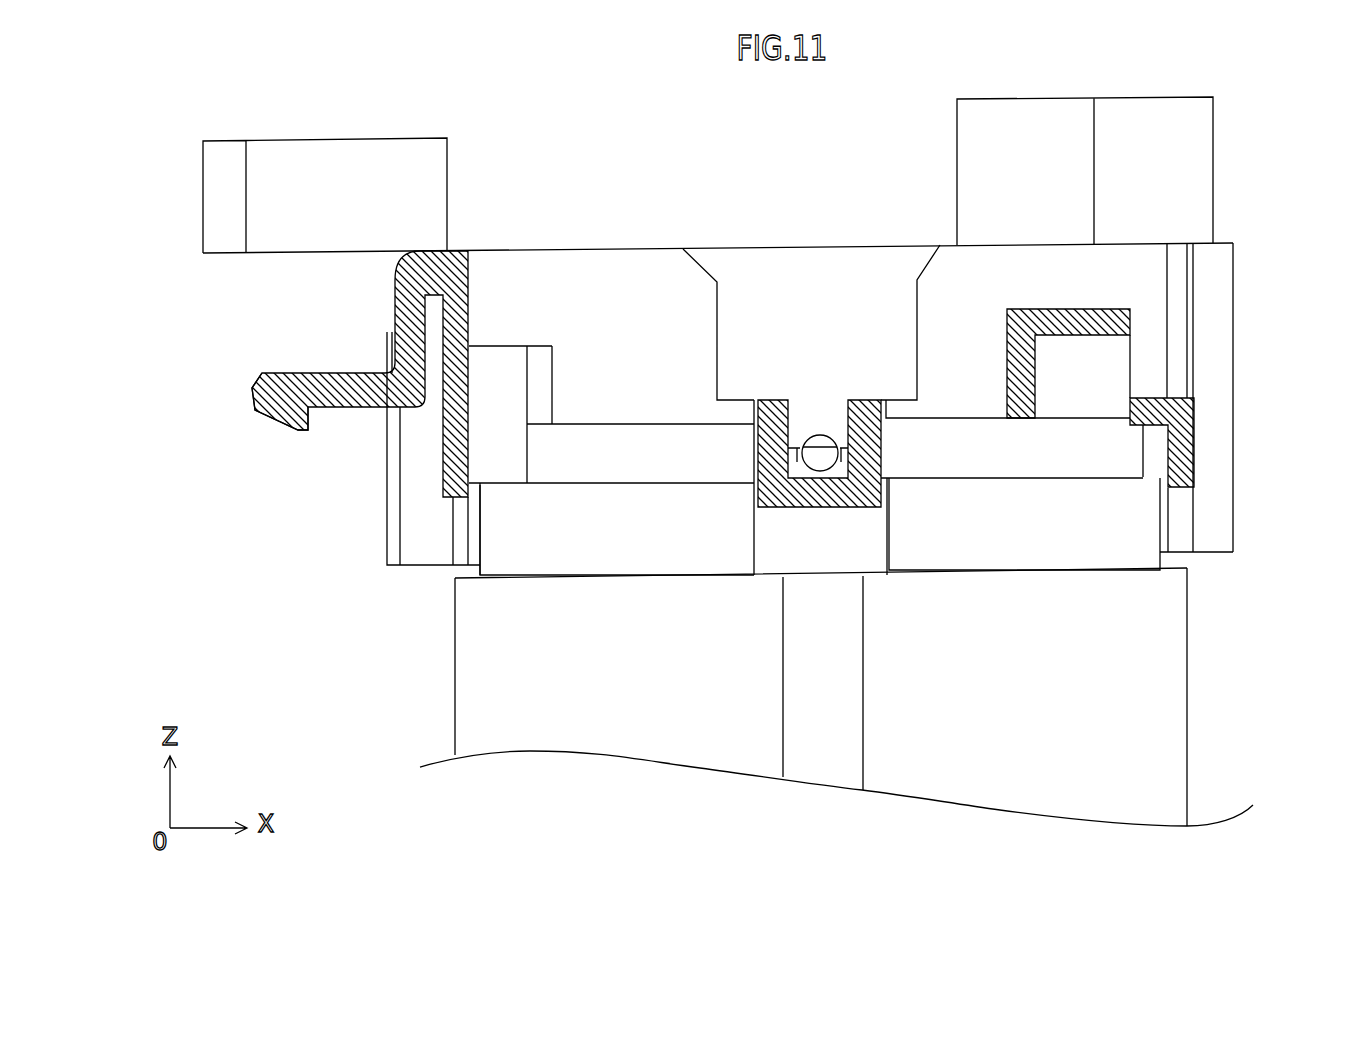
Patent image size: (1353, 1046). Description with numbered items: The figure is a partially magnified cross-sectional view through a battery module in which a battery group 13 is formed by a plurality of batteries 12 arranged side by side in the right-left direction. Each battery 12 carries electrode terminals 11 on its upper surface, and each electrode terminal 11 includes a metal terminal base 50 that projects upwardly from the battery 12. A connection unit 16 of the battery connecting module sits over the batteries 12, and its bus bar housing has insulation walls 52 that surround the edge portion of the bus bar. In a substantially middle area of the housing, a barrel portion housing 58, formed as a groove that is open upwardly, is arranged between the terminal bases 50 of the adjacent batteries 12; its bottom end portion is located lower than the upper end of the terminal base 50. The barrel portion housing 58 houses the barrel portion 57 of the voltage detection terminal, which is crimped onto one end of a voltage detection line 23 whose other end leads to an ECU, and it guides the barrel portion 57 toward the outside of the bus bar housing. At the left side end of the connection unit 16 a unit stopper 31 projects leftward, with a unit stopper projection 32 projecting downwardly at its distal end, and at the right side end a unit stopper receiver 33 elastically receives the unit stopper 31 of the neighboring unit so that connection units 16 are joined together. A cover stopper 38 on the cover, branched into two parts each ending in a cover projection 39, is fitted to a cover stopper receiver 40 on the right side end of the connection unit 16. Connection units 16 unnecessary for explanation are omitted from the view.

The electrode terminal 11 is at (543, 553).
The battery 12 is at (585, 718).
The battery group 13 is at (1203, 728).
The connection unit 16 is at (1224, 250).
The voltage detection line 23 is at (818, 450).
The unit stopper 31 is at (331, 383).
The unit stopper projection 32 is at (290, 415).
The unit stopper receiver 33 is at (1151, 420).
The cover stopper 38 is at (323, 167).
The cover projection 39 is at (222, 167).
The cover stopper receiver 40 is at (1152, 112).
The terminal base 50 is at (823, 543).
The insulation wall 52 is at (621, 250).
The barrel portion 57 is at (796, 456).
The barrel portion housing 58 is at (775, 417).